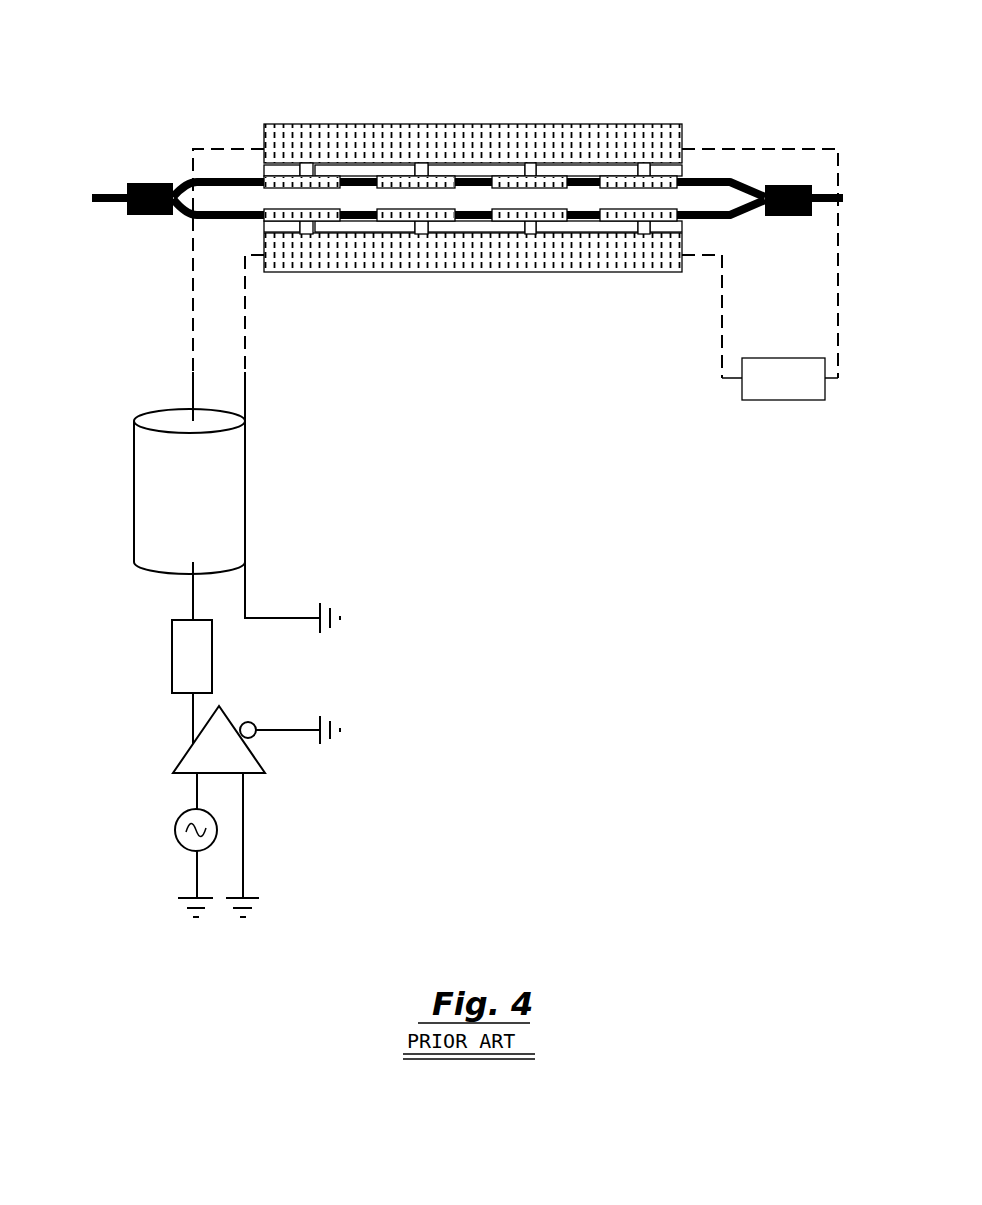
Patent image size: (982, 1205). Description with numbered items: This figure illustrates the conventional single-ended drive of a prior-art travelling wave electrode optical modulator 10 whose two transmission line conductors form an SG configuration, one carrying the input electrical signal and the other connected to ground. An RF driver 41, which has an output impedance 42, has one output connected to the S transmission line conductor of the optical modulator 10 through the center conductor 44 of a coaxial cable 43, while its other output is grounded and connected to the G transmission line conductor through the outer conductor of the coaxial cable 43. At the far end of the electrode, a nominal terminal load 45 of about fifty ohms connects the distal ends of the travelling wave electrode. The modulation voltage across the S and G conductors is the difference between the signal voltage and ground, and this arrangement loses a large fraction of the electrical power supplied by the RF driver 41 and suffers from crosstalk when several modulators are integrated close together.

The optical modulator 10 is at (455, 93).
The RF driver 41 is at (207, 757).
The output impedance 42 is at (175, 651).
The coaxial cable 43 is at (138, 472).
The center conductor 44 is at (192, 398).
The terminal load 45 is at (780, 402).